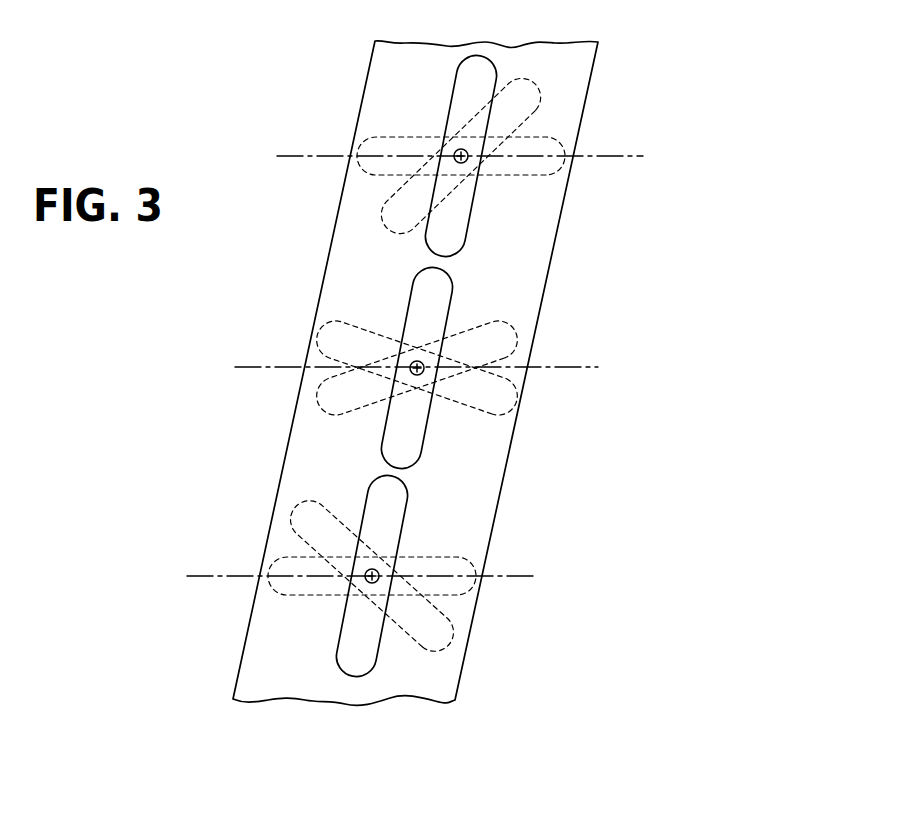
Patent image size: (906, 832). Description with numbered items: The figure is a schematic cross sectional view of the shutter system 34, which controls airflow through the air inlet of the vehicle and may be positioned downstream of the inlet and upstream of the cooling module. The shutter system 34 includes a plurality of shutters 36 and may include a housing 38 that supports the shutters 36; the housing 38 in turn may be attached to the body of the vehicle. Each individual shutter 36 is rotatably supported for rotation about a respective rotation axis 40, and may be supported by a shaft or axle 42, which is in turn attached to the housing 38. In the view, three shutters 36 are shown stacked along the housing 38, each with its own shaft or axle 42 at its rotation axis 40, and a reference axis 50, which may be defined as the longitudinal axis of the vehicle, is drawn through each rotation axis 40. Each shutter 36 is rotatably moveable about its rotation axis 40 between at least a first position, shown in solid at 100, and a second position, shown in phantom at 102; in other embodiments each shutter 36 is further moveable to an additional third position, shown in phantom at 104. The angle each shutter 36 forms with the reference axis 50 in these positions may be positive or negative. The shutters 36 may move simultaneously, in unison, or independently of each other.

The shutter system 34 is at (274, 52).
The shutter 36 is at (465, 79).
The housing 38 is at (324, 275).
The rotation axis 40 is at (455, 159).
The shaft or axle 42 is at (456, 152).
The reference axis 50 is at (625, 158).
The first position 100 is at (492, 57).
The second position 102 is at (552, 177).
The third position 104 is at (542, 90).